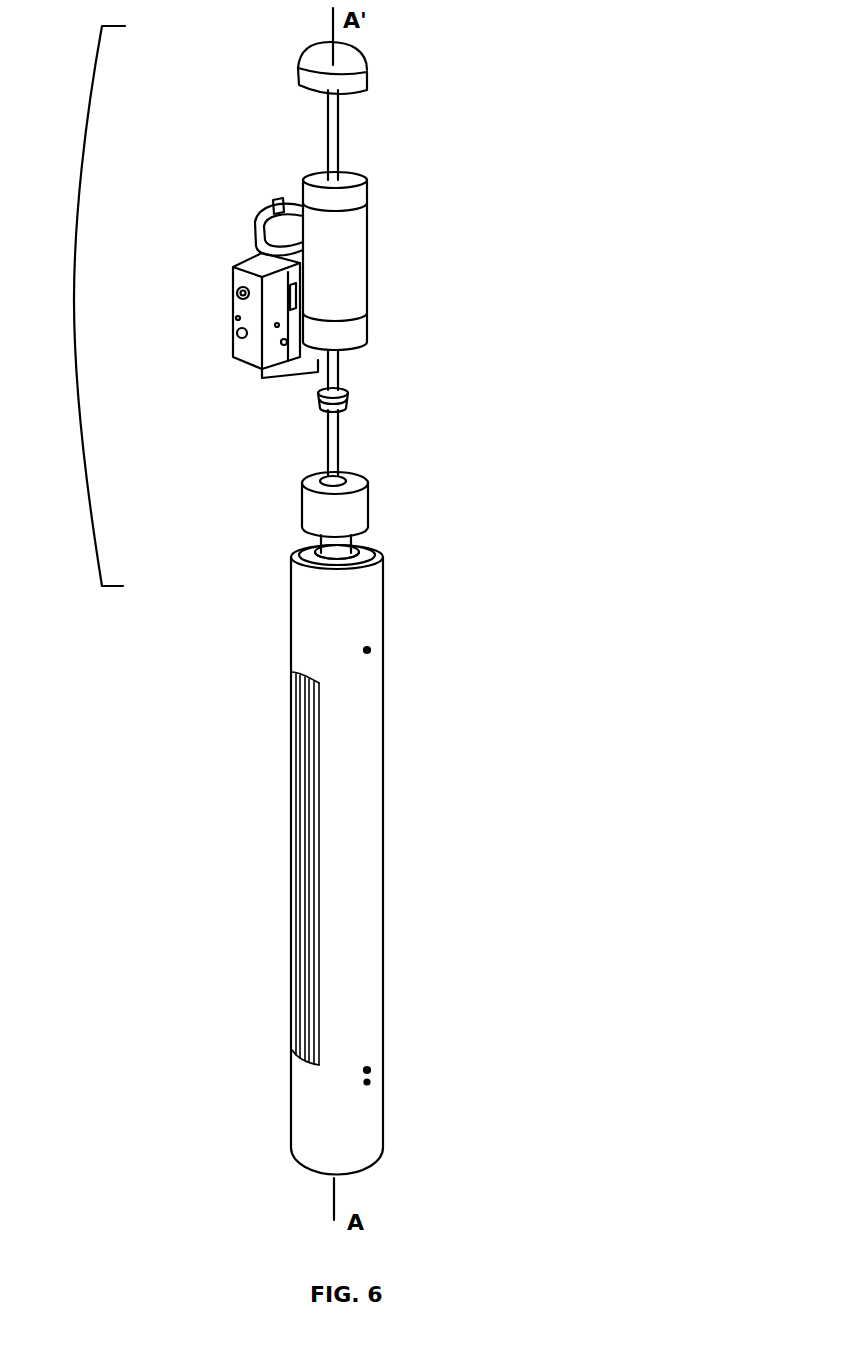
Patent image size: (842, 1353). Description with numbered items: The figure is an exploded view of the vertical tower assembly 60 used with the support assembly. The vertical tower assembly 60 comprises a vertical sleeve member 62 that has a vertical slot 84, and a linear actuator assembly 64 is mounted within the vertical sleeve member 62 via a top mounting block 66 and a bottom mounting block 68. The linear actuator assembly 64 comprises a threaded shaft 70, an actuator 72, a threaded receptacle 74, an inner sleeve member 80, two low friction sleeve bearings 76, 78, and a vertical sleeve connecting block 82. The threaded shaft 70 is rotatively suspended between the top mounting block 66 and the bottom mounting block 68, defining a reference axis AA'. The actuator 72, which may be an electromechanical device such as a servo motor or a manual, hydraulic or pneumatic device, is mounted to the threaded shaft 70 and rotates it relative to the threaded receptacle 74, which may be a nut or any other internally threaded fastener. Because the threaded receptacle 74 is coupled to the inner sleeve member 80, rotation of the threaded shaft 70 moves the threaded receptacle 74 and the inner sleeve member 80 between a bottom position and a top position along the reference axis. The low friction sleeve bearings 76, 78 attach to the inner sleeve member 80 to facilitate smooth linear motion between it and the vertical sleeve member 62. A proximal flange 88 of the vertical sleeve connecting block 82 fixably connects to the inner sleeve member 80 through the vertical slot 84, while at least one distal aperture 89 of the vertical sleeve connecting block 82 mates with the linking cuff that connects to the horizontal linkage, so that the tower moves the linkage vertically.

The vertical tower assembly 60 is at (540, 90).
The vertical sleeve member 62 is at (358, 833).
The linear actuator assembly 64 is at (80, 306).
The top mounting block 66 is at (343, 85).
The bottom mounting block 68 is at (342, 513).
The threaded shaft 70 is at (337, 435).
The actuator 72 is at (345, 563).
The threaded receptacle 74 is at (350, 395).
The low friction sleeve bearing 76 is at (277, 247).
The low friction sleeve bearing 78 is at (283, 363).
The inner sleeve member 80 is at (343, 273).
The vertical sleeve connecting block 82 is at (248, 298).
The vertical slot 84 is at (302, 878).
The proximal flange 88 is at (297, 293).
The distal aperture 89 is at (236, 332).